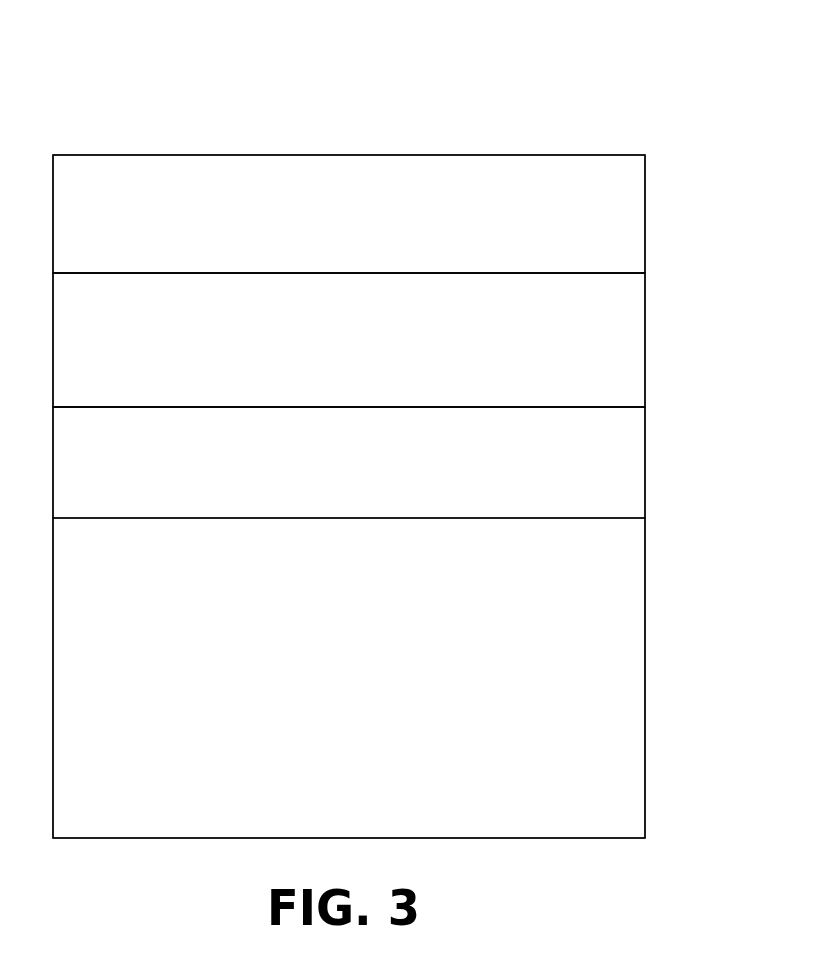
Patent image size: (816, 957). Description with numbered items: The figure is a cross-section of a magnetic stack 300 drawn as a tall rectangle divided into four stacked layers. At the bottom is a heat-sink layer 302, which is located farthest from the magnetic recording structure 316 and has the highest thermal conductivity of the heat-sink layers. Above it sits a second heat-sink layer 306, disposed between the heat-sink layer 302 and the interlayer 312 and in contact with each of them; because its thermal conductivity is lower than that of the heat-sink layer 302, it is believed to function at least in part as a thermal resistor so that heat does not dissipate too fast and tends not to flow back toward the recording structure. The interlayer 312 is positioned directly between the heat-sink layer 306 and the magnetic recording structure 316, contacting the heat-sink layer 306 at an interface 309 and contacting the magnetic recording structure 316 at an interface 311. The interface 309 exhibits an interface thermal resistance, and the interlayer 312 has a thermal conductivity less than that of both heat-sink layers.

The magnetic stack 300 is at (658, 72).
The heat-sink layer 302 is at (645, 670).
The heat-sink layer 306 is at (645, 468).
The interface 309 is at (601, 406).
The interface 311 is at (601, 273).
The interlayer 312 is at (645, 328).
The magnetic recording structure 316 is at (645, 200).